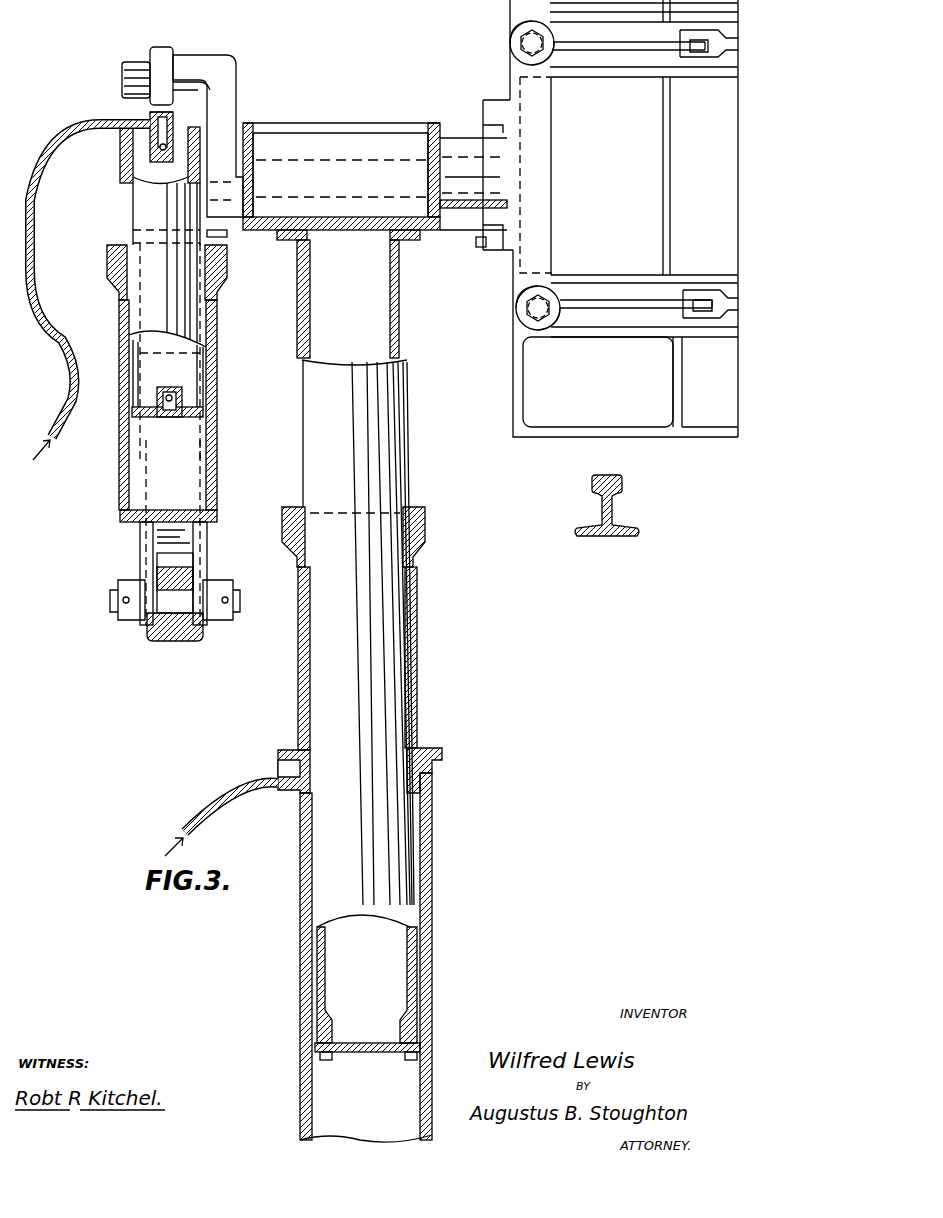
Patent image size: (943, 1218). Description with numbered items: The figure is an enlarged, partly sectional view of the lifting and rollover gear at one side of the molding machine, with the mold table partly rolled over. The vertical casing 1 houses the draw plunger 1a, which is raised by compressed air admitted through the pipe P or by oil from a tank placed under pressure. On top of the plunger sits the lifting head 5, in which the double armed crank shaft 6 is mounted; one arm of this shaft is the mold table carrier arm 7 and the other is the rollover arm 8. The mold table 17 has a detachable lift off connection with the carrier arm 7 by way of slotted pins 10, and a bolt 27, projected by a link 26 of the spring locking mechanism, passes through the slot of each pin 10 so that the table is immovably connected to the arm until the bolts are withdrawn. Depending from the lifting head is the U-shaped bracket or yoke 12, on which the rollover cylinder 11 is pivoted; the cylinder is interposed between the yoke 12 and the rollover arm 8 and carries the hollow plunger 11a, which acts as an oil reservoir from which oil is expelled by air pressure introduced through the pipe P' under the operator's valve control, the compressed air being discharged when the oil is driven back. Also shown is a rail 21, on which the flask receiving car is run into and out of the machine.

The casing 1 is at (427, 825).
The lifting plunger 1a is at (367, 987).
The lifting head 5 is at (280, 125).
The double armed crank shaft 6 is at (337, 160).
The mold table carrier arm 7 is at (470, 203).
The rollover arm 8 is at (238, 80).
The slotted pin 10 is at (521, 50).
The rollover cylinder 11 is at (217, 327).
The hollow plunger 11a is at (153, 420).
The U-shaped bracket 12 is at (168, 641).
The mold table 17 is at (665, 431).
The rail 21 is at (612, 510).
The link 26 is at (731, 48).
The bolt 27 is at (605, 50).
The pipe P is at (221, 819).
The pipe P' is at (90, 292).